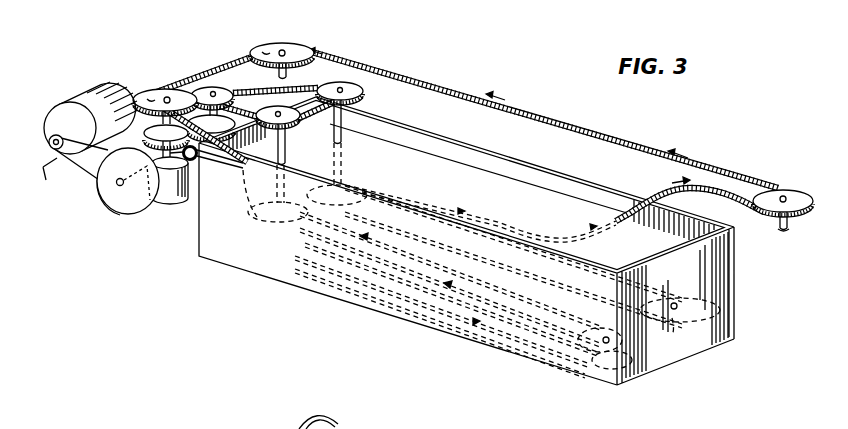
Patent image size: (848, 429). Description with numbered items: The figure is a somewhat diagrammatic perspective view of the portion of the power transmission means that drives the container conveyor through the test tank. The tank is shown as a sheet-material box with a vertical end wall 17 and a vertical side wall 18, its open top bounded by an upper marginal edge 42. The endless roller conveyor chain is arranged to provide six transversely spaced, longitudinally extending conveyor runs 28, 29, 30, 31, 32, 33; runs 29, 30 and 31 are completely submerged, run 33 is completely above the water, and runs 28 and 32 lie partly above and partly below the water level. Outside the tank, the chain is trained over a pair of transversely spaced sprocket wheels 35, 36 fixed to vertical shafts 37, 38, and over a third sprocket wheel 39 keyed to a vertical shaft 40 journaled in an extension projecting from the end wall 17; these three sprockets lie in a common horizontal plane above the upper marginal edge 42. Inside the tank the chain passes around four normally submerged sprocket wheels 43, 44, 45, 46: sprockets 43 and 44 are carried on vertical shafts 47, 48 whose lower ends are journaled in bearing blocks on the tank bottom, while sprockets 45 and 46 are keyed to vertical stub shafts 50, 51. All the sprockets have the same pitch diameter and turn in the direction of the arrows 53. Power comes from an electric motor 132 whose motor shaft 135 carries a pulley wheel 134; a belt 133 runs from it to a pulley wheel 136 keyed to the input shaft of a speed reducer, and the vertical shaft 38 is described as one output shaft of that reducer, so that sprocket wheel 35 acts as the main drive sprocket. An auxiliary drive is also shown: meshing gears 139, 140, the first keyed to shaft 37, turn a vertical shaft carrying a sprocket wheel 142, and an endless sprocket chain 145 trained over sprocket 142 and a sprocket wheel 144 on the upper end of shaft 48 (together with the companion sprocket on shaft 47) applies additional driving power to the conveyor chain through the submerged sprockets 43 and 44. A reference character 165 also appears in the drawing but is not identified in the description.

The end wall 17 is at (722, 318).
The side wall 18 is at (558, 362).
The conveyor run 28 is at (500, 326).
The conveyor run 29 is at (519, 308).
The conveyor run 30 is at (515, 275).
The conveyor run 31 is at (555, 272).
The conveyor run 32 is at (500, 220).
The conveyor run 33 is at (622, 133).
The sprocket wheel 35 is at (157, 93).
The sprocket wheel 36 is at (299, 44).
The vertical shaft 37 is at (168, 92).
The vertical shaft 38 is at (282, 47).
The sprocket wheel 39 is at (776, 216).
The vertical shaft 40 is at (788, 226).
The upper marginal edge 42 is at (654, 258).
The sprocket wheel 43 is at (254, 226).
The sprocket wheel 44 is at (368, 187).
The sprocket wheel 45 is at (635, 341).
The sprocket wheel 46 is at (700, 325).
The vertical shaft 47 is at (283, 146).
The vertical shaft 48 is at (342, 123).
The stub shaft 50 is at (606, 364).
The stub shaft 51 is at (672, 335).
The arrows 53 is at (805, 194).
The electric motor 132 is at (62, 118).
The belt 133 is at (96, 190).
The pulley wheel 134 is at (47, 152).
The motor shaft 135 is at (55, 151).
The pulley wheel 136 is at (132, 207).
The gear 139 is at (155, 124).
The gear 140 is at (220, 142).
The sprocket wheel 142 is at (230, 92).
The sprocket wheel 144 is at (362, 90).
The sprocket chain 145 is at (322, 80).
The wheel 165 is at (335, 415).